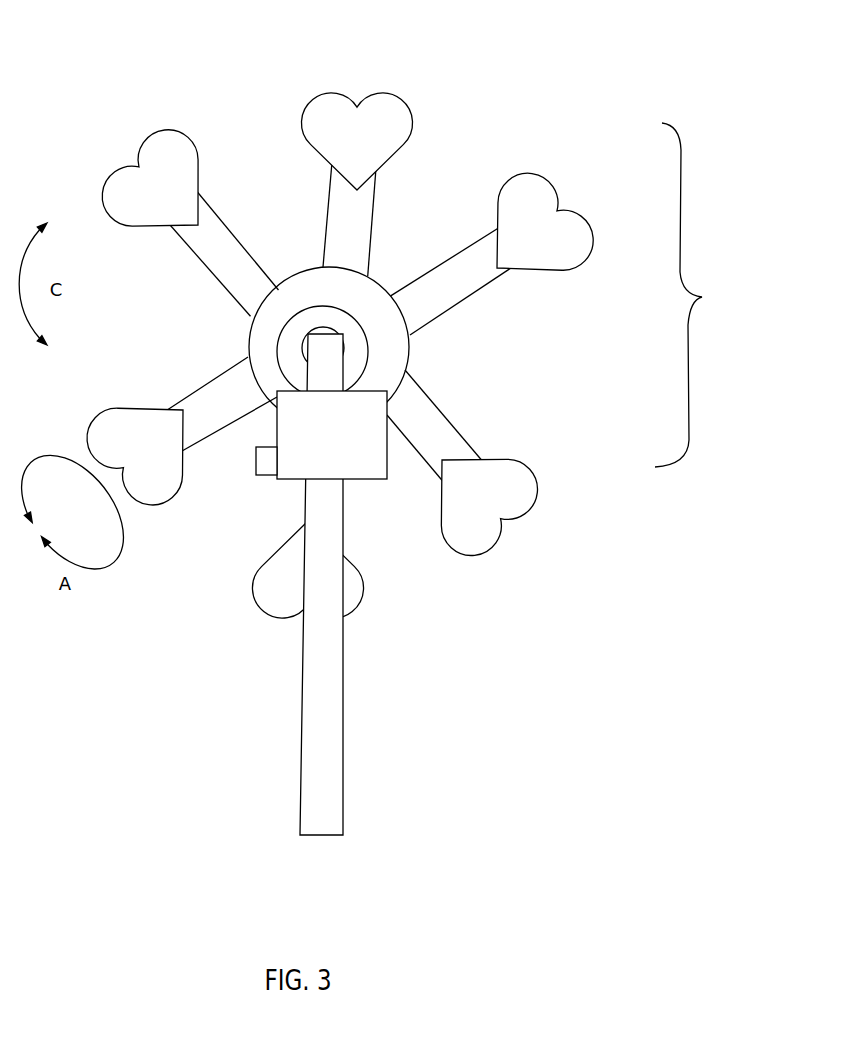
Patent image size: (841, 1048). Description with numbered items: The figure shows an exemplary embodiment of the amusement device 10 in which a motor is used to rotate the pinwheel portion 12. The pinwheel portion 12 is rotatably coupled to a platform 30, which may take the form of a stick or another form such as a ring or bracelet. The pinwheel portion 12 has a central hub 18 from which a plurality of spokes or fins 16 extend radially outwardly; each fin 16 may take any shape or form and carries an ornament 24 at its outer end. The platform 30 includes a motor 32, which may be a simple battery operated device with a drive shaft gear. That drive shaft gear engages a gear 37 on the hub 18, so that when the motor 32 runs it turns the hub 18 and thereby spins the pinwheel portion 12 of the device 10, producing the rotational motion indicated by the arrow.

The amusement device 10 is at (109, 39).
The pinwheel portion 12 is at (702, 297).
The spokes or fins 16 is at (227, 225).
The central hub 18 is at (372, 275).
The heart-shaped ornament 24 is at (183, 132).
The platform 30 is at (343, 647).
The motor 32 is at (377, 480).
The gear 37 is at (280, 337).